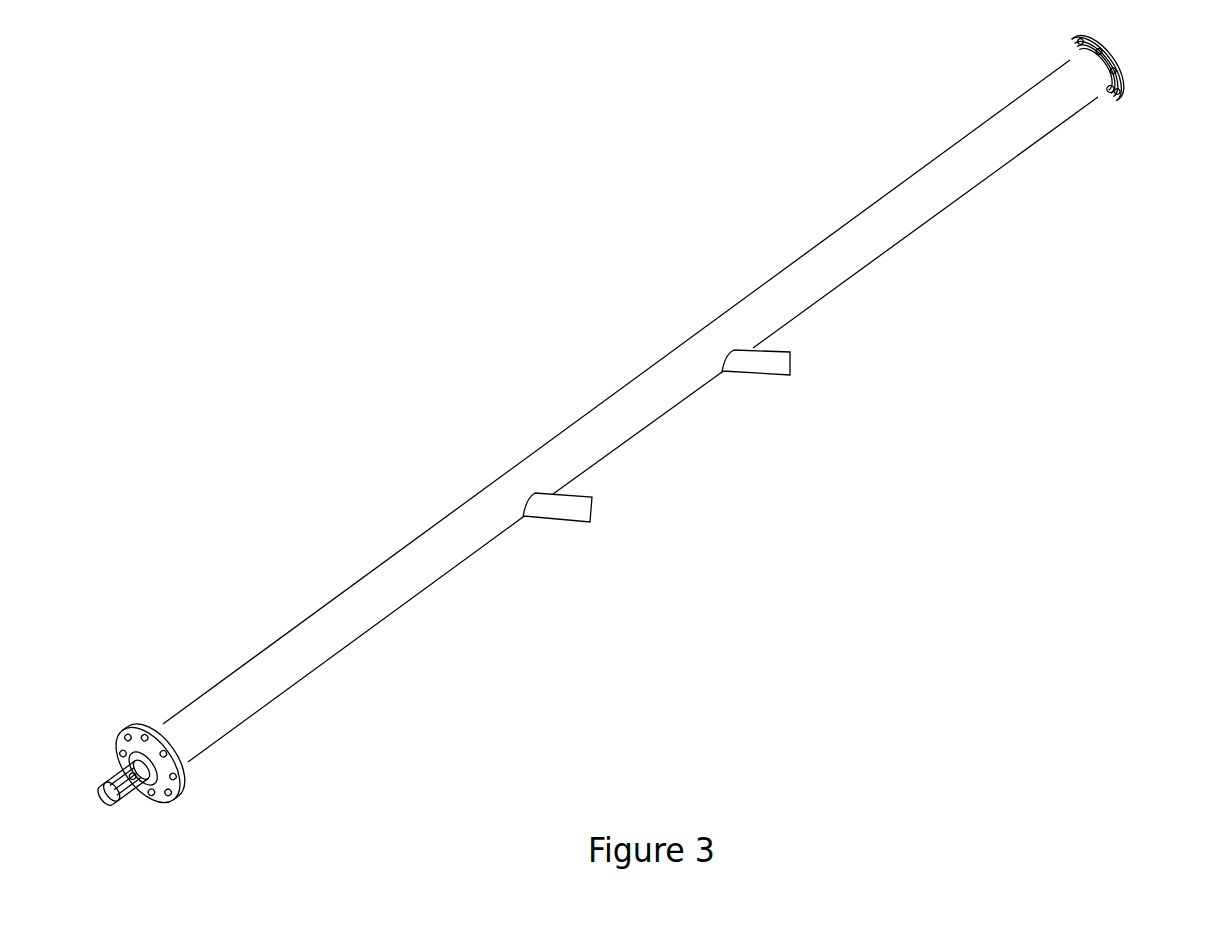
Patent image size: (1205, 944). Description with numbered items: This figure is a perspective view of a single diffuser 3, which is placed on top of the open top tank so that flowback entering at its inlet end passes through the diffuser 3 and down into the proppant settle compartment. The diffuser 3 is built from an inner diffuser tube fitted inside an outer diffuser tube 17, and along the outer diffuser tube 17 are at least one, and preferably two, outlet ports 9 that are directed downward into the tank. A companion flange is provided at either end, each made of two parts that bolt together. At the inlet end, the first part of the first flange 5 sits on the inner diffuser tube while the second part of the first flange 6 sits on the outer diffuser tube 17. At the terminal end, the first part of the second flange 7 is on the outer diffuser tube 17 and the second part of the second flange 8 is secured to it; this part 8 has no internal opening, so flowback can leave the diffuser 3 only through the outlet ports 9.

The diffuser 3 is at (647, 457).
The first part of first flange 5 is at (178, 792).
The second part of first flange 6 is at (140, 730).
The first part of second flange 7 is at (1122, 97).
The second part of second flange 8 is at (1097, 53).
The outlet port 9 is at (570, 510).
The outer diffuser tube 17 is at (340, 636).